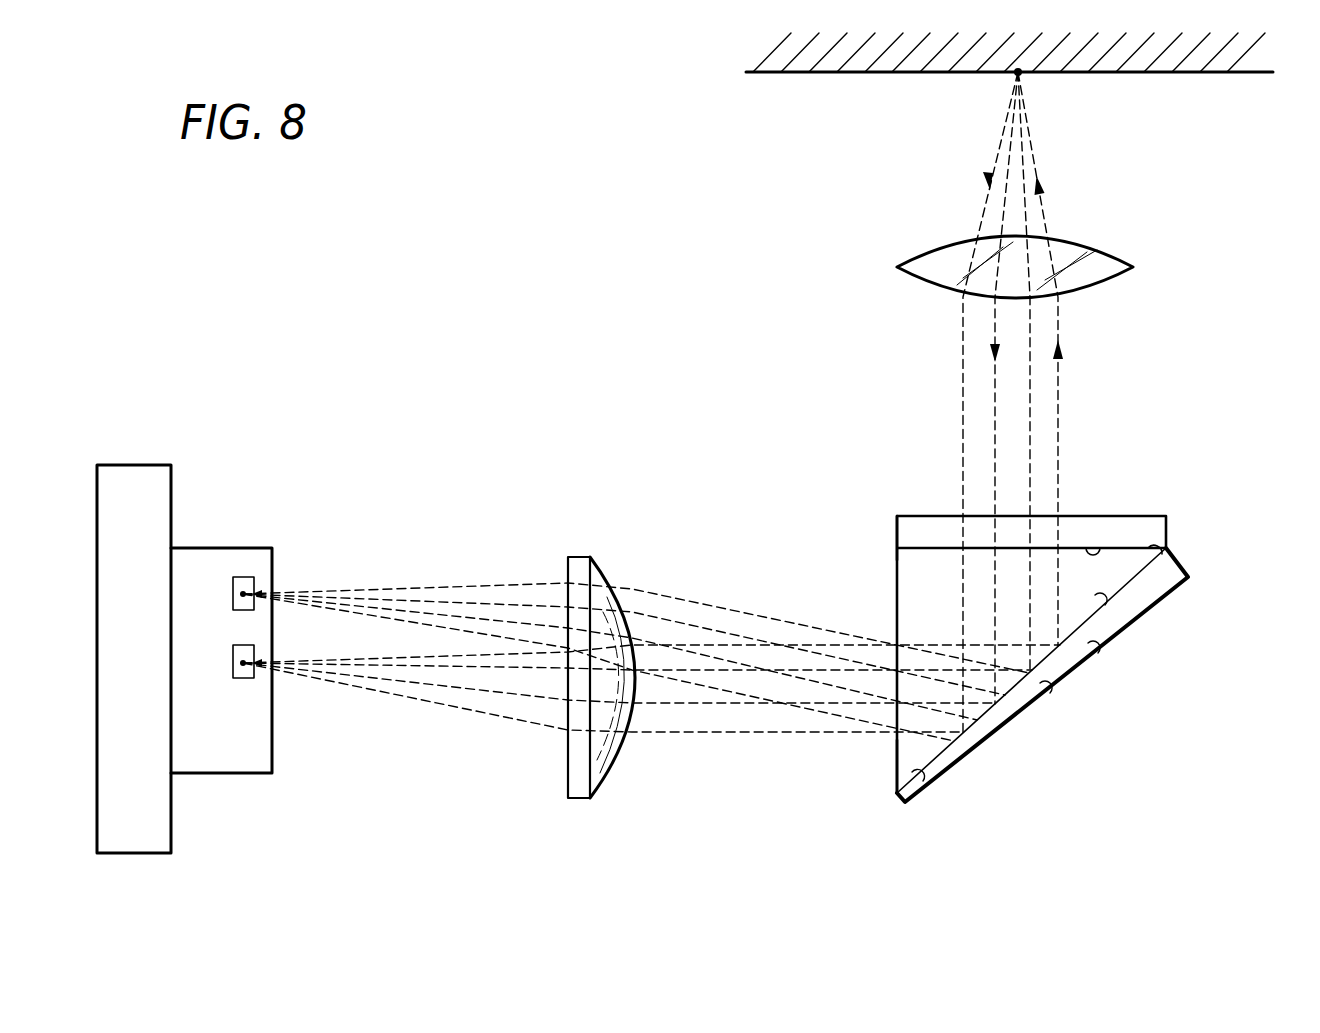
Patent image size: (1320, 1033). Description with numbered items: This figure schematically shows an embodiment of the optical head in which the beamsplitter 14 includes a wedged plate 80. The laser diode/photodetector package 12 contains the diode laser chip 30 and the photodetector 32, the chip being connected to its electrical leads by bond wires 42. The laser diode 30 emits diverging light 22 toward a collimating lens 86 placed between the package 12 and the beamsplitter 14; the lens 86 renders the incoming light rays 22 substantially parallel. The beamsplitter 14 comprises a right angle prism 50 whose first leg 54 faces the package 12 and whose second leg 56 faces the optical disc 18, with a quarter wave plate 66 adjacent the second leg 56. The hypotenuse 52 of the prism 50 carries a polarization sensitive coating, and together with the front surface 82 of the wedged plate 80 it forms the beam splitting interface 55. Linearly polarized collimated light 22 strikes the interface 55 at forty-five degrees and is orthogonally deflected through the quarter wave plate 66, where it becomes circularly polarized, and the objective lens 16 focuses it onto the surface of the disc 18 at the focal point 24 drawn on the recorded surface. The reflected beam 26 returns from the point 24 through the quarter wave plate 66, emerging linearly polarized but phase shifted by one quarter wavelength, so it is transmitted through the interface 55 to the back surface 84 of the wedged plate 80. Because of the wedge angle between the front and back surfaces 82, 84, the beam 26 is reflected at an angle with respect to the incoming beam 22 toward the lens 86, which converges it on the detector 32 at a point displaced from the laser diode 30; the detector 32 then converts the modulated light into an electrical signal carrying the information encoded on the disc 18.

The laser diode/photodetector package 12 is at (150, 465).
The beamsplitter 14 is at (1188, 493).
The objective lens 16 is at (1098, 258).
The optical disc 18 is at (1218, 74).
The incoming light beam 22 is at (1036, 158).
The focal point on target 24 is at (1015, 77).
The reflected beam 26 is at (996, 158).
The diode laser chip 30 is at (232, 678).
The photodetector 32 is at (236, 577).
The bond wires 42 is at (1046, 689).
The right angle prism 50 is at (895, 760).
The hypotenuse 52 is at (1104, 601).
The first leg 54 is at (895, 600).
The beam splitting interface 55 is at (1163, 540).
The second leg 56 is at (1104, 547).
The quarter wave plate 66 is at (901, 528).
The wedged plate 80 is at (1165, 582).
The front surface 82 is at (920, 778).
The back surface 84 is at (1097, 648).
The collimating lens 86 is at (585, 557).